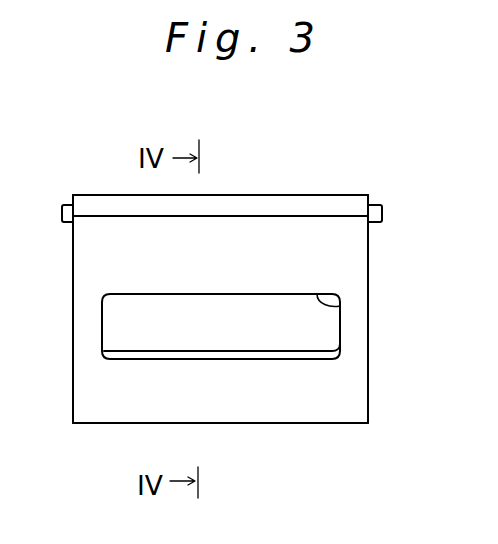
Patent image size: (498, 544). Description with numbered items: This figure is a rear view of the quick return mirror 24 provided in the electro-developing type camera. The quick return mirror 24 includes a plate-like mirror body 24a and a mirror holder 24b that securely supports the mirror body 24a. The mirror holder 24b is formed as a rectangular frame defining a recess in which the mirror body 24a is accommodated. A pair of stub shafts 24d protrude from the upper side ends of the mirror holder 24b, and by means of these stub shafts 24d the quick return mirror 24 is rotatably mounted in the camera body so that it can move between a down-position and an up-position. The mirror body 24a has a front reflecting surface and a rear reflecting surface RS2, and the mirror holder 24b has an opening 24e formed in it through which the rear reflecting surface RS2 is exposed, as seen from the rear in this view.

The quick return mirror 24 is at (348, 434).
The mirror body 24a is at (330, 334).
The mirror holder 24b is at (348, 246).
The stub shafts 24d is at (62, 212).
The opening 24e is at (340, 306).
The rear reflecting surface RS2 is at (251, 337).